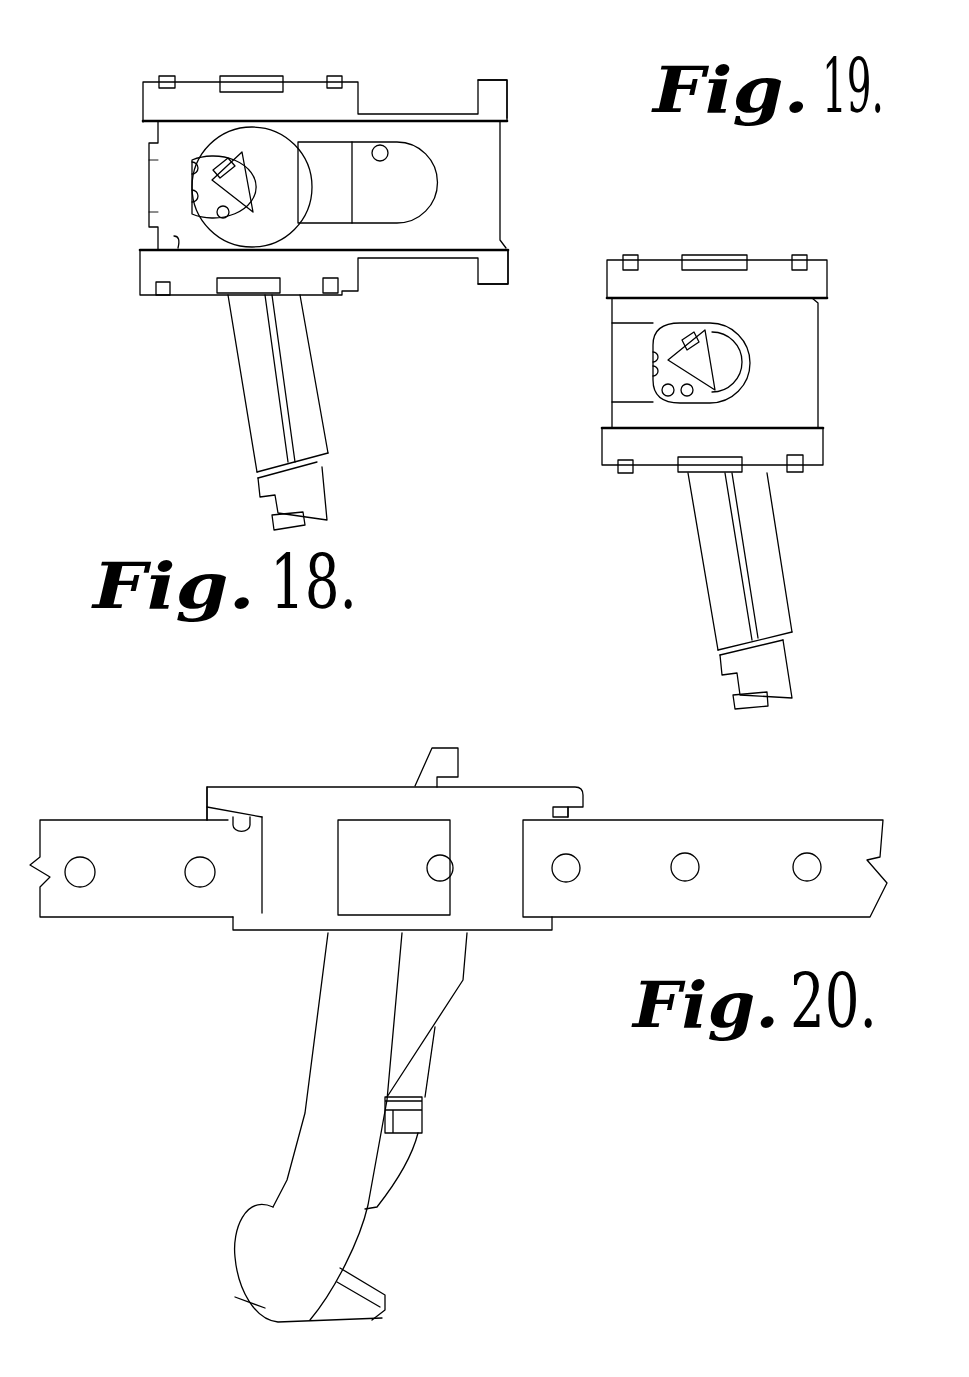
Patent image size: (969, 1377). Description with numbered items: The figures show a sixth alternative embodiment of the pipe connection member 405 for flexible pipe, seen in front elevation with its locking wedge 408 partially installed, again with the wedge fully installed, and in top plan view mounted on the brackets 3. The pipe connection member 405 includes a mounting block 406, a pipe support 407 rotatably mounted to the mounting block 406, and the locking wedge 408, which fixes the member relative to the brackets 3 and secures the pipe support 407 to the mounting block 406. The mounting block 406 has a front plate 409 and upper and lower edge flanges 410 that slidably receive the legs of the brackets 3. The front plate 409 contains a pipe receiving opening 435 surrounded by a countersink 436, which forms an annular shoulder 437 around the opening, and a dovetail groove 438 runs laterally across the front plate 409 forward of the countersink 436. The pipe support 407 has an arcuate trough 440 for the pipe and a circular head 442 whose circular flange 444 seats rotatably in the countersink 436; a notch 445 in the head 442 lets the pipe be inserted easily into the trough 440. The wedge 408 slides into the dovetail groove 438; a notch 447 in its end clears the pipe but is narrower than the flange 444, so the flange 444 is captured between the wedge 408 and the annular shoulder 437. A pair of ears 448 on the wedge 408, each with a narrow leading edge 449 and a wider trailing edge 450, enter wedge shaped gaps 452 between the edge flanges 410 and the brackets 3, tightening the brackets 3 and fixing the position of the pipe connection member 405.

In FIG. 20, the bracket 3 is at (795, 815).
In FIG. 18, the pipe connection member 405 is at (145, 37).
In FIG. 19, the pipe connection member 405 is at (783, 218).
In FIG. 20, the pipe connection member 405 is at (480, 732).
In FIG. 18, the mounting block 406 is at (200, 70).
In FIG. 19, the mounting block 406 is at (825, 280).
In FIG. 20, the mounting block 406 is at (512, 785).
In FIG. 18, the pipe support 407 is at (332, 426).
In FIG. 19, the pipe support 407 is at (788, 562).
In FIG. 20, the pipe support 407 is at (405, 1163).
In FIG. 18, the locking wedge 408 is at (502, 177).
In FIG. 19, the locking wedge 408 is at (810, 347).
In FIG. 20, the locking wedge 408 is at (207, 817).
In FIG. 18, the front plate 409 is at (158, 180).
In FIG. 20, the edge flange 410 is at (502, 933).
In FIG. 18, the pipe receiving opening 435 is at (201, 172).
In FIG. 19, the pipe receiving opening 435 is at (663, 388).
In FIG. 18, the countersink 436 is at (201, 200).
In FIG. 19, the countersink 436 is at (657, 368).
In FIG. 19, the annular shoulder 437 is at (653, 352).
In FIG. 18, the dovetail groove 438 is at (177, 240).
In FIG. 18, the arcuate trough 440 is at (242, 387).
In FIG. 19, the arcuate trough 440 is at (773, 518).
In FIG. 18, the circular head 442 is at (262, 147).
In FIG. 19, the circular head 442 is at (672, 340).
In FIG. 18, the circular flange 444 is at (265, 243).
In FIG. 18, the notch 445 is at (222, 218).
In FIG. 19, the notch 445 is at (689, 395).
In FIG. 18, the notch 447 is at (390, 148).
In FIG. 18, the ear 448 is at (493, 80).
In FIG. 20, the ear 448 is at (220, 820).
In FIG. 18, the leading edge 449 is at (478, 93).
In FIG. 18, the trailing edge 450 is at (512, 92).
In FIG. 20, the wedge shaped gap 452 is at (247, 827).